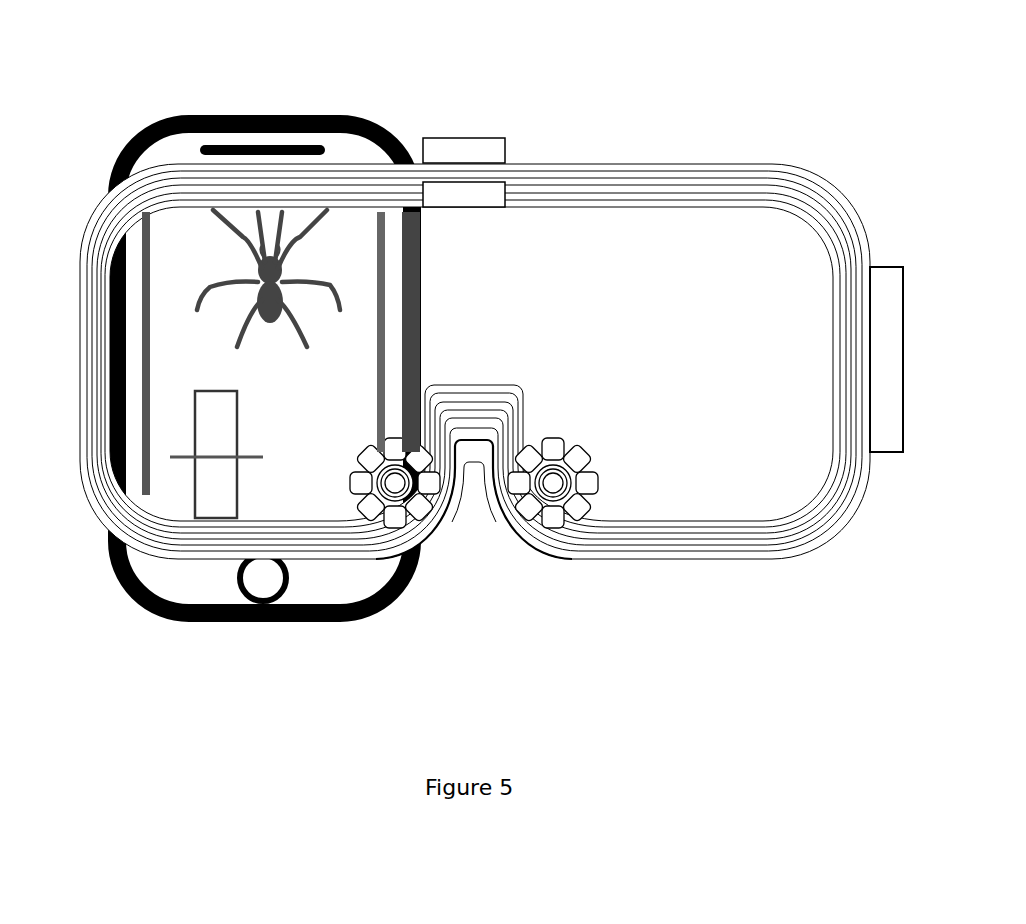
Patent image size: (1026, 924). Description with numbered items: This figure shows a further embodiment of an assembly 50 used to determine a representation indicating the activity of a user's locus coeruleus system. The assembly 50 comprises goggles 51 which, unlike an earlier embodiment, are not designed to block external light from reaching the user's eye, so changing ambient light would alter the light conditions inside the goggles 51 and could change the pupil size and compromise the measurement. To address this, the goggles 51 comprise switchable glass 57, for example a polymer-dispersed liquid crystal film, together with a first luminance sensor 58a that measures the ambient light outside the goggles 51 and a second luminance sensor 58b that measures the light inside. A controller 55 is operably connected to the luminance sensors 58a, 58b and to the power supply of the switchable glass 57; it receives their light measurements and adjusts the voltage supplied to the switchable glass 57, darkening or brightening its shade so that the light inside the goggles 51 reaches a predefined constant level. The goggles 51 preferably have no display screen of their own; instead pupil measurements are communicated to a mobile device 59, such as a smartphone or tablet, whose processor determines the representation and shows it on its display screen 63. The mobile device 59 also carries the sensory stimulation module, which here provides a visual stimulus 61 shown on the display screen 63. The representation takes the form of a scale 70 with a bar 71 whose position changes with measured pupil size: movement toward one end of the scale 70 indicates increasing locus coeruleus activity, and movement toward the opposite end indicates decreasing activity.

The assembly 50 is at (672, 137).
The goggles 51 is at (798, 548).
The controller 55 is at (890, 370).
The switchable glass 57 is at (735, 318).
The first luminance sensor 58a is at (473, 150).
The second luminance sensor 58b is at (470, 193).
The mobile device 59 is at (345, 150).
The visual stimulus 61 is at (263, 268).
The display screen 63 is at (315, 405).
The scale 70 is at (210, 417).
The bar 71 is at (218, 458).